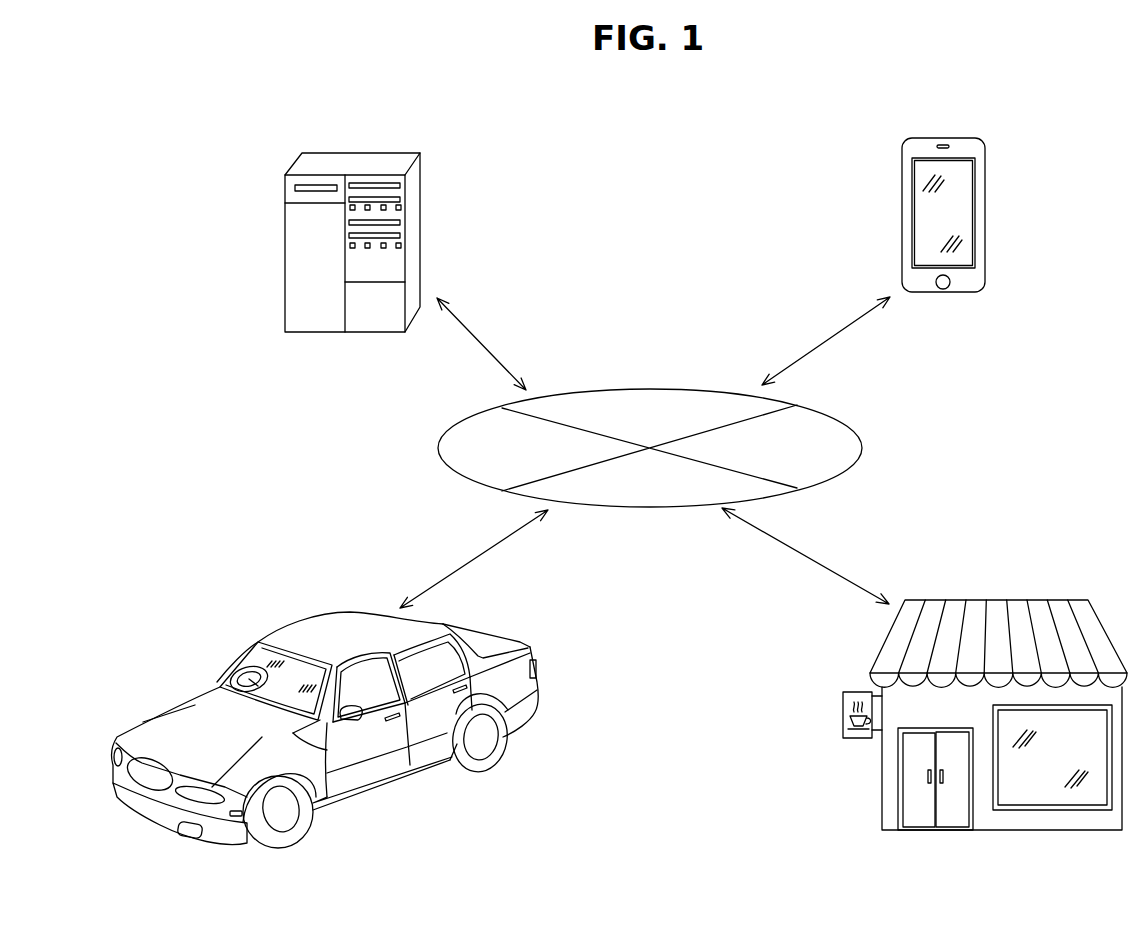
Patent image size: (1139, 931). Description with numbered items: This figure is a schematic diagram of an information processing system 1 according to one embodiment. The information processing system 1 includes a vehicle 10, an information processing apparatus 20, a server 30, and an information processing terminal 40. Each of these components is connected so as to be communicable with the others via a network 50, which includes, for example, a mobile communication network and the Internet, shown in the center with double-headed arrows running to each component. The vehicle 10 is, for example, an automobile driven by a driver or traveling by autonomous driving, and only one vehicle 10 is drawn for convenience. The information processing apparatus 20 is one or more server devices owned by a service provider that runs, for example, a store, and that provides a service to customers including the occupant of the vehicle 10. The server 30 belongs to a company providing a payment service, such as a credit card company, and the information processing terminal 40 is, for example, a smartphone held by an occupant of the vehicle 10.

The information processing system 1 is at (673, 202).
The vehicle 10 is at (330, 627).
The information processing apparatus 20 is at (1057, 585).
The server 30 is at (285, 250).
The information processing terminal 40 is at (985, 206).
The network 50 is at (650, 389).